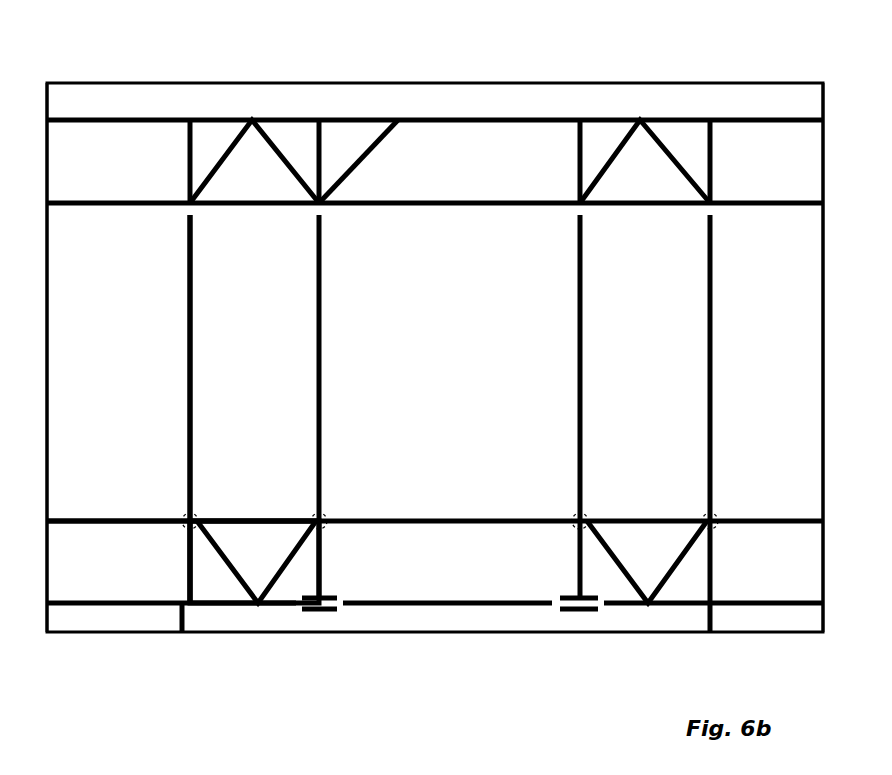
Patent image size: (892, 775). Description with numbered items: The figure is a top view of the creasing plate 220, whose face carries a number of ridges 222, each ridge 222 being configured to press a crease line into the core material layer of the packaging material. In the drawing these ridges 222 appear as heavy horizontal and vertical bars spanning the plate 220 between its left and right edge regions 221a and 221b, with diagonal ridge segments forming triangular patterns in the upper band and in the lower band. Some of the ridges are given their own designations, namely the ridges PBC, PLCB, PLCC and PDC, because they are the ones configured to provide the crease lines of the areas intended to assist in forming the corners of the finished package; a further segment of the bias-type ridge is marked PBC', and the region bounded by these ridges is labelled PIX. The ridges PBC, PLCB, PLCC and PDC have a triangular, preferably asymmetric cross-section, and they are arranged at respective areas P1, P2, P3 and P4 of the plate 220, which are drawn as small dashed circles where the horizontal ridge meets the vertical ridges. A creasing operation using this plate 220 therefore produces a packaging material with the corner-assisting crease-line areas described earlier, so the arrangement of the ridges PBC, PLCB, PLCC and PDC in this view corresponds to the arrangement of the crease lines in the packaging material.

The plate 220 is at (477, 96).
The ridge 222 is at (100, 119).
The left edge region 221a is at (47, 273).
The right edge region 221b is at (822, 332).
The ridge PLCB is at (188, 450).
The ridge PBC is at (118, 556).
The bias line segment PBC' is at (254, 495).
The pixel PIX is at (181, 530).
The ridge PDC is at (228, 543).
The ridge PLCC is at (191, 583).
The area P1 is at (180, 516).
The area P2 is at (328, 528).
The area P3 is at (577, 516).
The area P4 is at (719, 528).